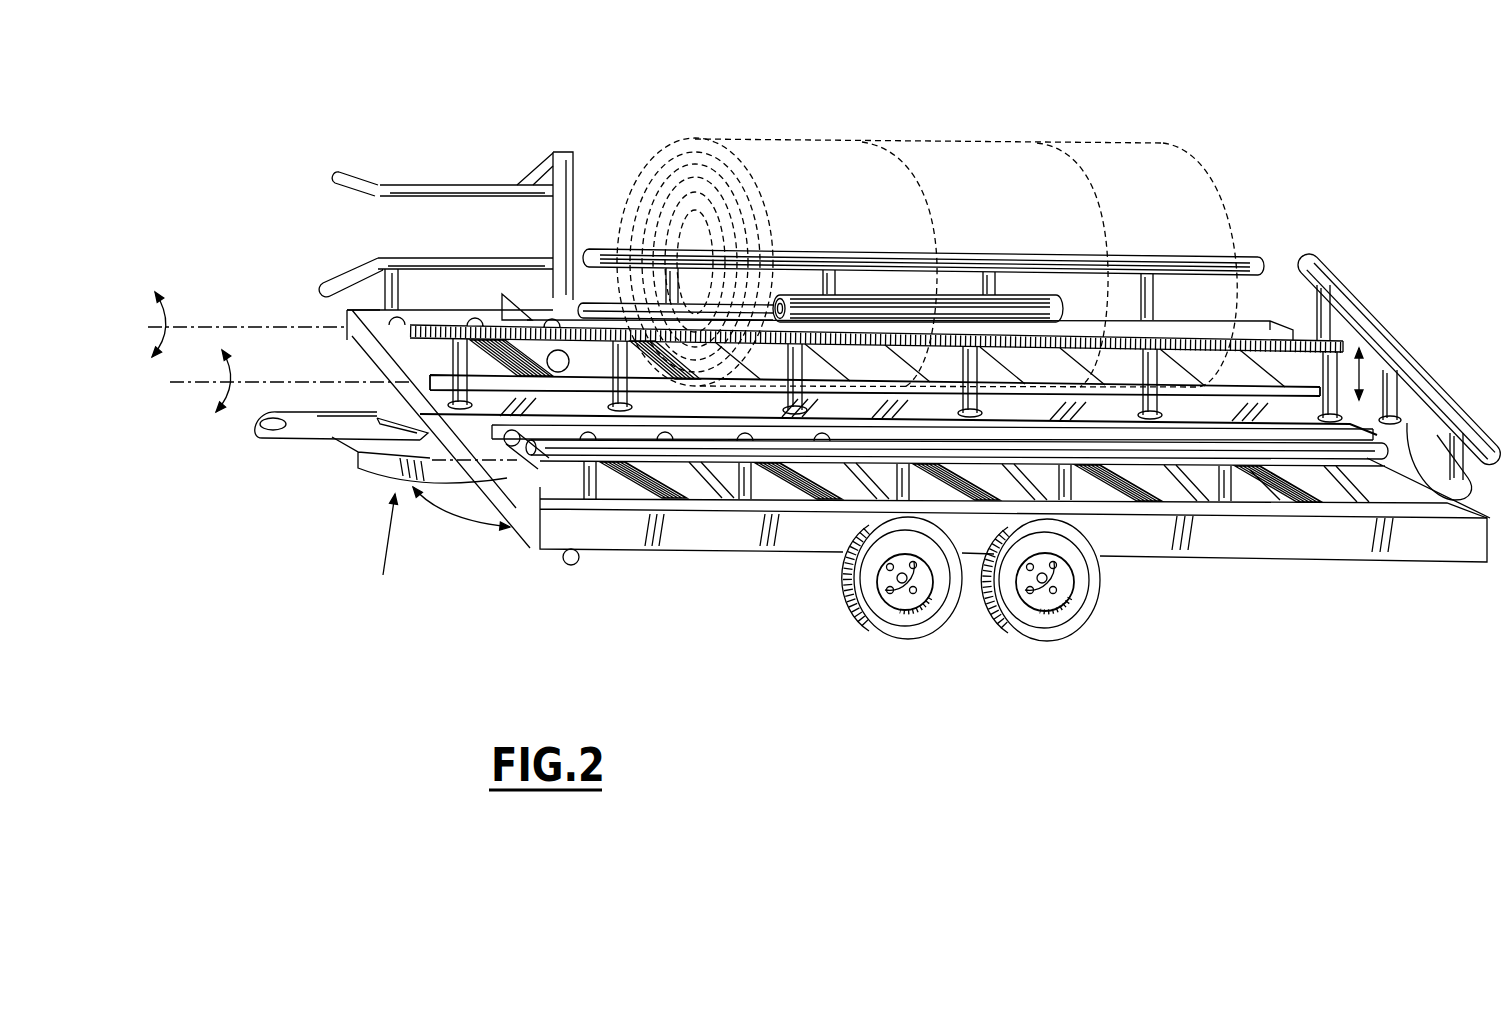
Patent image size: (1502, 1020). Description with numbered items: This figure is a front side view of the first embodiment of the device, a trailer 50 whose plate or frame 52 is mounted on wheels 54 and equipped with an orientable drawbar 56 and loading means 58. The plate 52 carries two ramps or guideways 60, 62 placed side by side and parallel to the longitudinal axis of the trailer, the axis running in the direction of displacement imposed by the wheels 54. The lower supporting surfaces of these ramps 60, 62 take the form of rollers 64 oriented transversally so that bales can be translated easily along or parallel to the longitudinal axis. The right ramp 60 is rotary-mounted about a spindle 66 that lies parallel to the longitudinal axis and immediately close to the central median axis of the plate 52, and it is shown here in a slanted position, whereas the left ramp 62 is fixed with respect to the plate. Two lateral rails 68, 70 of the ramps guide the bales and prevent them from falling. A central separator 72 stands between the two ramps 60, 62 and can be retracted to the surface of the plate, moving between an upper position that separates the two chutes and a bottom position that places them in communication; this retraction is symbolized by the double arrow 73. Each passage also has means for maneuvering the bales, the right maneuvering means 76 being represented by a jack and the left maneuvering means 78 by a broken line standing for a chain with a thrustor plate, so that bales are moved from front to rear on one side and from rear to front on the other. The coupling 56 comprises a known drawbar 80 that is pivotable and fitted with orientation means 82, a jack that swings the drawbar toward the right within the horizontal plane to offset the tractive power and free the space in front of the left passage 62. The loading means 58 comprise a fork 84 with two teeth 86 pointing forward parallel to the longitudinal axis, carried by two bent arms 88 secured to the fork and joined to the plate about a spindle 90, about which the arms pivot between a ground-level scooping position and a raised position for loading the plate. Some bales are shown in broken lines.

The trailer 50 is at (1422, 566).
The plate 52 is at (655, 537).
The wheels 54 is at (893, 624).
The orientable drawbar 56 is at (341, 512).
The loading means 58 is at (486, 172).
The ramp 60 is at (372, 325).
The ramp 62 is at (541, 497).
The rollers 64 is at (395, 327).
The spindle 66 is at (184, 386).
The lateral rail 68 is at (1205, 262).
The lateral rail 70 is at (1246, 472).
The central separator 72 is at (1335, 338).
The double arrow 73 is at (1358, 377).
The maneuvering means 76 is at (883, 303).
The maneuvering means 78 is at (1318, 492).
The drawbar 80 is at (371, 466).
The orientation means 82 is at (568, 566).
The fork 84 is at (396, 172).
The teeth 86 is at (350, 185).
The bent arms 88 is at (572, 158).
The spindle 90 is at (200, 325).